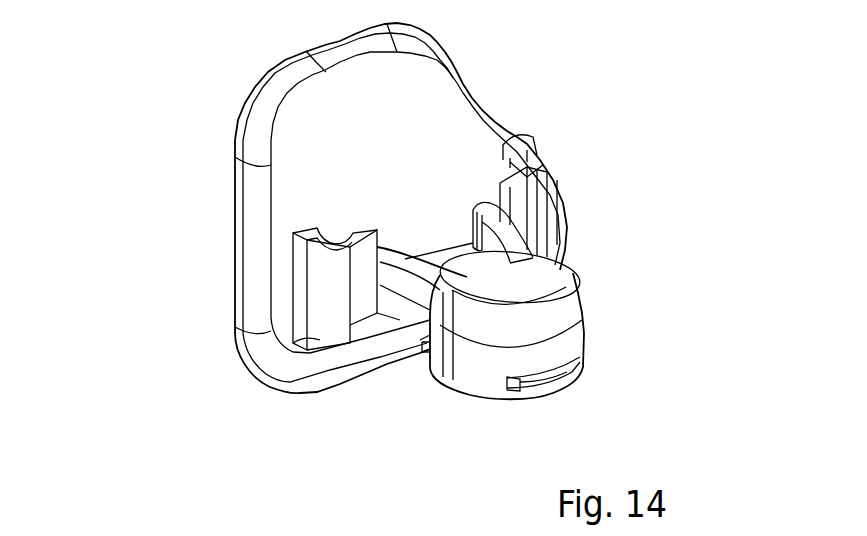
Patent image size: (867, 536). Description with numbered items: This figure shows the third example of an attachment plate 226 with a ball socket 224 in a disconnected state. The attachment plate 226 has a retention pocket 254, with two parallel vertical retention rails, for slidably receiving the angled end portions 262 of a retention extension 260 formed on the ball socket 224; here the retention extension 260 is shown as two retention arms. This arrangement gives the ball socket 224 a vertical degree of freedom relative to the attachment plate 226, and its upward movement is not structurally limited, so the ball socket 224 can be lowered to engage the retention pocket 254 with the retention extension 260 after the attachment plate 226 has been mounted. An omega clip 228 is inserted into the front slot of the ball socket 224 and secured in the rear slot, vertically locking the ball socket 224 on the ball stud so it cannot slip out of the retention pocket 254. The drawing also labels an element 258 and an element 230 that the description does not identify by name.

The attachment plate 226 is at (320, 183).
The retention pocket 254 is at (340, 280).
The ball socket 224 is at (483, 368).
The junction 258 is at (430, 327).
The angled end portions 262 is at (513, 127).
The retention extension 260 is at (510, 232).
The omega clip 228 is at (570, 372).
The slot flange 230 is at (520, 386).